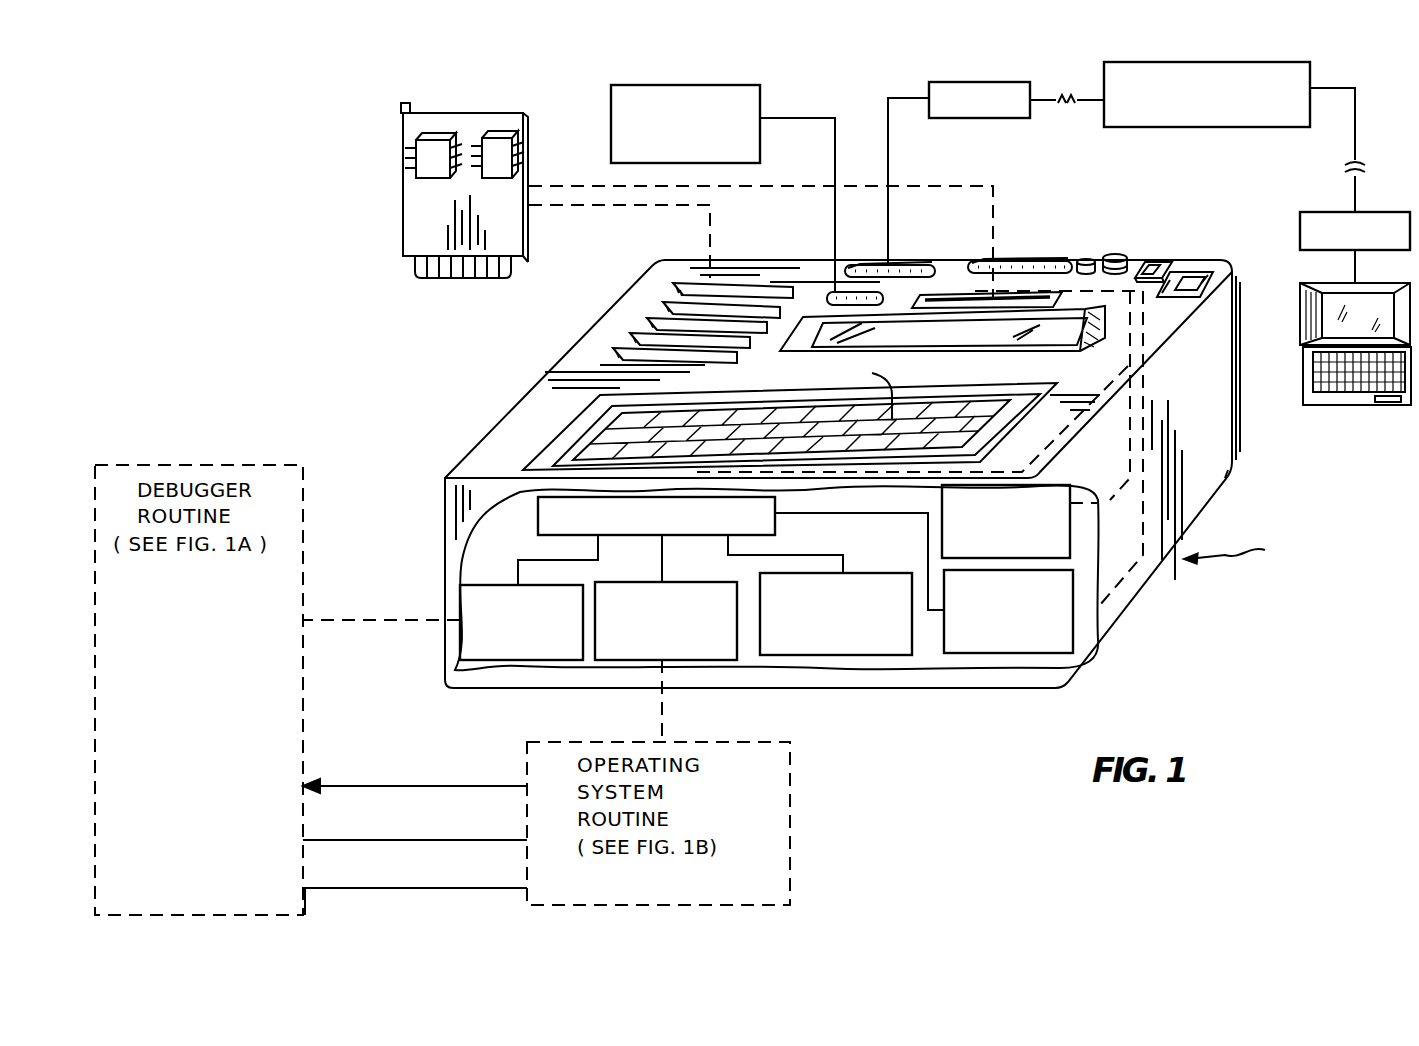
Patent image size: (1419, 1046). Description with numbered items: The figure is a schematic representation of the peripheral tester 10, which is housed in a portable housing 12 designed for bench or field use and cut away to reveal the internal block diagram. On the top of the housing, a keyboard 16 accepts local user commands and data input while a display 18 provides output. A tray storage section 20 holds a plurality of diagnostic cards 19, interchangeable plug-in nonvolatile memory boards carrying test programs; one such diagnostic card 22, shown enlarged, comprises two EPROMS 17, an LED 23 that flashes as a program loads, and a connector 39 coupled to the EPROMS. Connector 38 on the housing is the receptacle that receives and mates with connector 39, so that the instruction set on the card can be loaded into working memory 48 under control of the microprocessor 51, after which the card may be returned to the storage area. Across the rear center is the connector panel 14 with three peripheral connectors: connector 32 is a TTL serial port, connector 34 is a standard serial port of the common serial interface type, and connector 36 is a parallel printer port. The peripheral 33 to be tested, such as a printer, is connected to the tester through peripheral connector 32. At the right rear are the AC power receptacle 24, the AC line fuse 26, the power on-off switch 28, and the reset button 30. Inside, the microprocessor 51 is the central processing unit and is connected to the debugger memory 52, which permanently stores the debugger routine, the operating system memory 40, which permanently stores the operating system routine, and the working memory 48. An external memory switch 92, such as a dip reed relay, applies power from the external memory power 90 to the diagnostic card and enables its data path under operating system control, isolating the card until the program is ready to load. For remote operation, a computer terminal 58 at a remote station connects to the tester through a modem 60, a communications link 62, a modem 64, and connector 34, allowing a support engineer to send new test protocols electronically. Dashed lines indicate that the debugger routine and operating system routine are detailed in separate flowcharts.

The peripheral tester 10 is at (1239, 558).
The housing 12 is at (1190, 380).
The connector panel 14 is at (862, 267).
The keyboard 16 is at (643, 435).
The EPROMS 17 is at (490, 148).
The display 18 is at (990, 379).
The diagnostic cards 19 is at (618, 348).
The tray storage section 20 is at (663, 288).
The diagnostic card 22 is at (411, 193).
The LED 23 is at (400, 110).
The AC power receptacle 24 is at (1206, 268).
The AC line fuse 26 is at (1118, 258).
The power on-off switch 28 is at (1153, 260).
The reset button 30 is at (1088, 261).
The peripheral connector 32 is at (826, 292).
The peripheral 33 is at (703, 83).
The peripheral connector 34 is at (918, 268).
The peripheral connector 36 is at (1017, 266).
The connector 38 is at (947, 292).
The connector 39 is at (471, 277).
The operating system memory 40 is at (647, 582).
The working memory 48 is at (858, 573).
The microprocessor 51 is at (538, 520).
The debugger memory 52 is at (490, 585).
The computer terminal 58 is at (1307, 286).
The modem 60 is at (1303, 215).
The communications link 62 is at (1147, 62).
The modem 64 is at (950, 82).
The external memory power 90 is at (1018, 654).
The external memory switch 92 is at (943, 504).